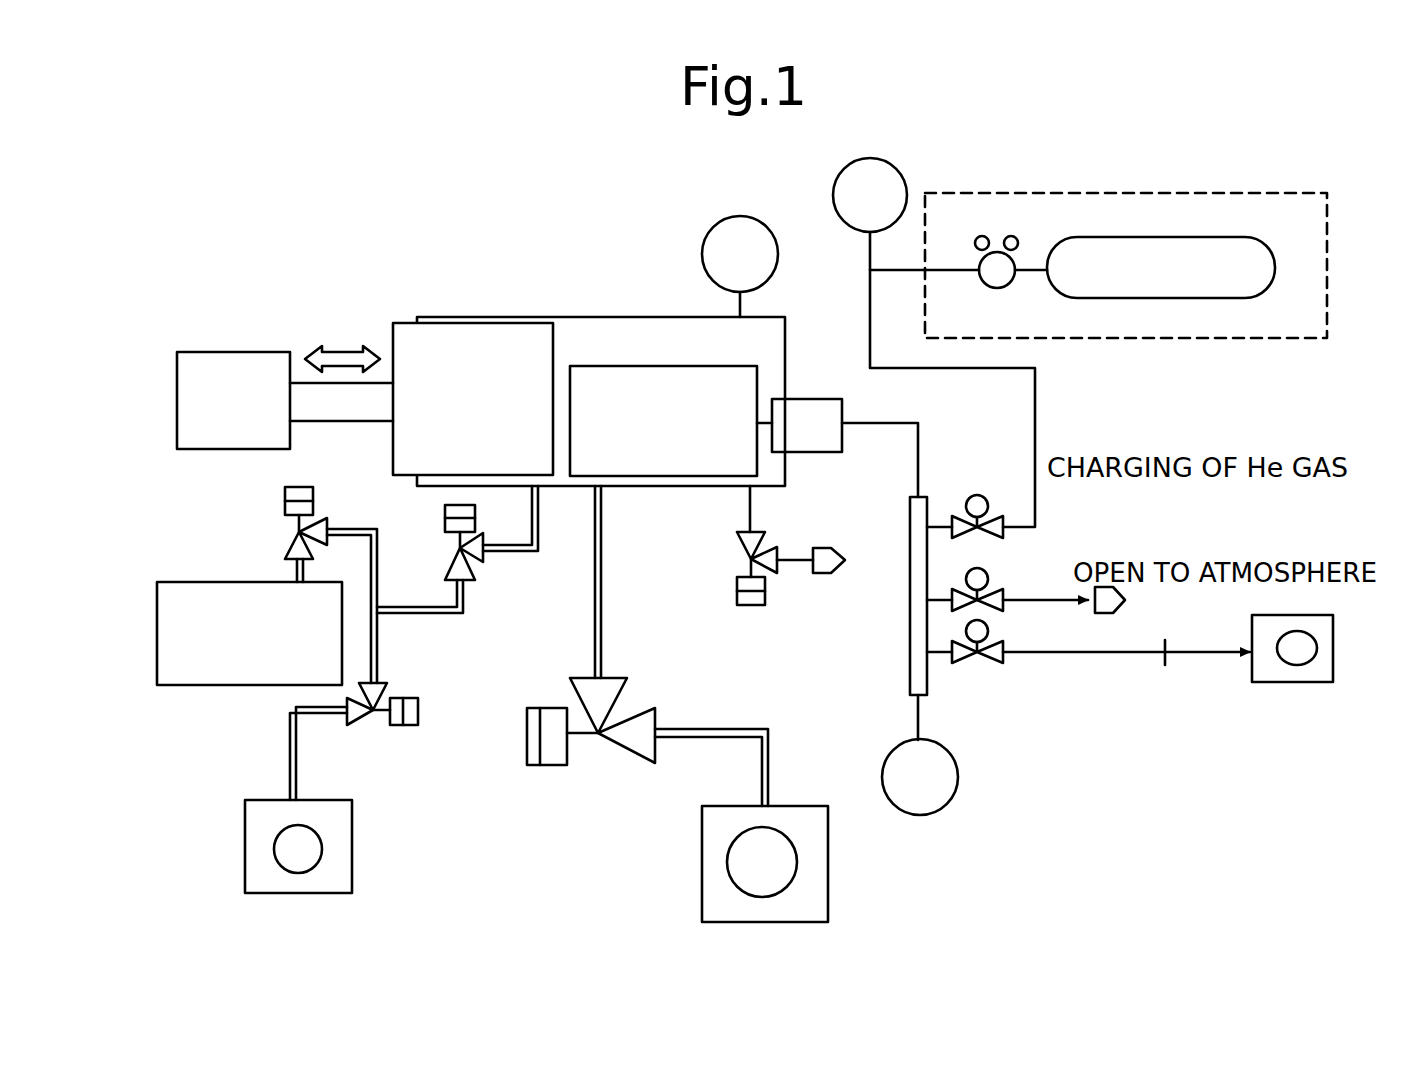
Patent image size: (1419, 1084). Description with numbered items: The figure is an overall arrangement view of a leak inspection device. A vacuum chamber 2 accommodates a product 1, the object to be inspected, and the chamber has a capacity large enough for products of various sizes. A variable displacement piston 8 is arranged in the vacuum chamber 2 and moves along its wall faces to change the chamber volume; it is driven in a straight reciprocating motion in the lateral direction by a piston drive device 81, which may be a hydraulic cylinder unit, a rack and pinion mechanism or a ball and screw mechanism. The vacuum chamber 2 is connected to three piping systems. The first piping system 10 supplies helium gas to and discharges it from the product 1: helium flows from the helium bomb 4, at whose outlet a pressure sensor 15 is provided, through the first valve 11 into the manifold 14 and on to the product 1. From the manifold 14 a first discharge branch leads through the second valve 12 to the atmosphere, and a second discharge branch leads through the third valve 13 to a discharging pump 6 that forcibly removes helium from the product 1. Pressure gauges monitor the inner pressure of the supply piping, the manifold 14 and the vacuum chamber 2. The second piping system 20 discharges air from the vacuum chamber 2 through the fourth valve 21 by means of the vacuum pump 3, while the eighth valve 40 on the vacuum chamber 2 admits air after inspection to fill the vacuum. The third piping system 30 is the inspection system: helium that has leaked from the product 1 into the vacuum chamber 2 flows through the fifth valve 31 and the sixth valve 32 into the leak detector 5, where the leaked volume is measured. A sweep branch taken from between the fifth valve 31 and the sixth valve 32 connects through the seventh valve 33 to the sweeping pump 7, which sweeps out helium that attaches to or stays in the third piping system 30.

The product 1 is at (646, 477).
The vacuum chamber 2 is at (636, 317).
The vacuum pump 3 is at (702, 903).
The helium bomb 4 is at (1206, 255).
The leak detector 5 is at (197, 590).
The discharging pump 6 is at (1333, 628).
The sweeping pump 7 is at (344, 873).
The variable displacement piston 8 is at (400, 323).
The piston drive device 81 is at (177, 390).
The first piping system 10 is at (1055, 424).
The first valve 11 is at (957, 517).
The second valve 12 is at (985, 590).
The third valve 13 is at (996, 663).
The manifold 14 is at (912, 661).
The pressure sensor 15 is at (997, 252).
The second piping system 20 is at (607, 626).
The fourth valve 21 is at (609, 746).
The third piping system 30 is at (418, 620).
The fifth valve 31 is at (470, 563).
The sixth valve 32 is at (313, 522).
The seventh valve 33 is at (376, 722).
The eighth valve 40 is at (758, 554).